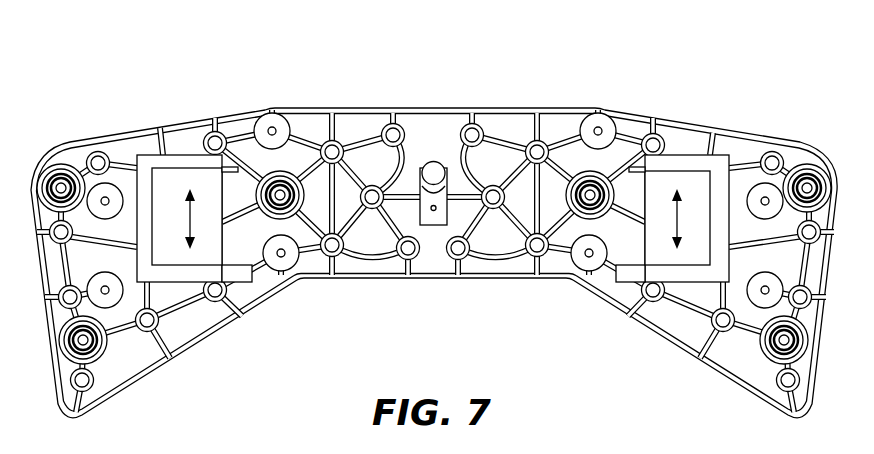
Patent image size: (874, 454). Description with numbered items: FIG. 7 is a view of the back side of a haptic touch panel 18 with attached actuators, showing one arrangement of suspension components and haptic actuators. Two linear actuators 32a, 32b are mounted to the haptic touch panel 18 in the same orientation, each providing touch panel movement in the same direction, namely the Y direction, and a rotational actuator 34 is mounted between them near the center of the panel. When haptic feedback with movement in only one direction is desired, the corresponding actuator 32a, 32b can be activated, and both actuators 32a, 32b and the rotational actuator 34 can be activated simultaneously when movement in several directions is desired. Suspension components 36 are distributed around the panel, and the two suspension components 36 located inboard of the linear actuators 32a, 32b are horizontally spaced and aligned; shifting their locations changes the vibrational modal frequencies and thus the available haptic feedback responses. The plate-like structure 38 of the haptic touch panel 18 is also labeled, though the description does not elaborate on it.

The haptic touch panel 18 is at (147, 34).
The frame plate 38 is at (124, 148).
The suspension component 36 is at (61, 172).
The linear actuator 32a is at (182, 186).
The linear actuator 32b is at (682, 186).
The rotational actuator 34 is at (430, 177).